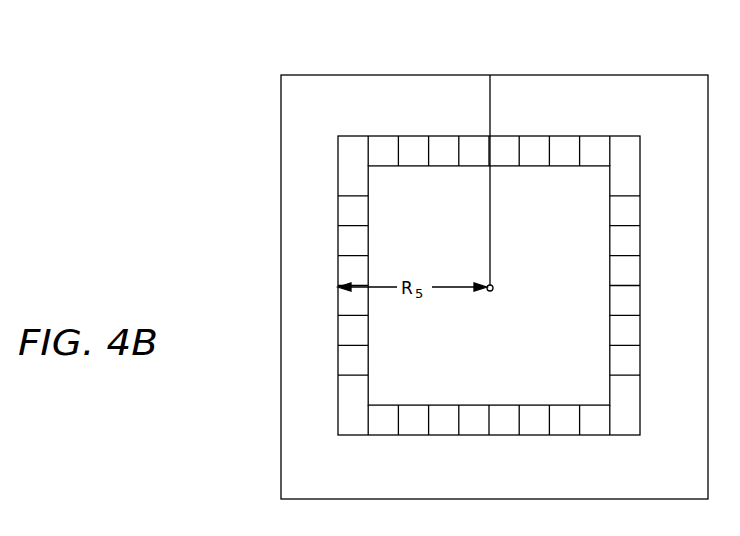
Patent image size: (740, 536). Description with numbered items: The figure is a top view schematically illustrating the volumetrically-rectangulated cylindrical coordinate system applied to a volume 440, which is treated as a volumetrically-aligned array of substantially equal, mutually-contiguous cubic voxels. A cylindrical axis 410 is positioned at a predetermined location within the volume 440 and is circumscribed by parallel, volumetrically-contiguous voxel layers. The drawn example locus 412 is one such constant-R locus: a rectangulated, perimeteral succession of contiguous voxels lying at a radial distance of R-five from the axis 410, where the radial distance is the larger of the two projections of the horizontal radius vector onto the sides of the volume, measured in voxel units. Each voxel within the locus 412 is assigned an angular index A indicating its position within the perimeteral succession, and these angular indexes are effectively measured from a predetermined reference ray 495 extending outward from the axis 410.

The volume 440 is at (325, 93).
The voxel layer 412 is at (600, 135).
The reference ray 495 is at (491, 115).
The cylindrical axis 410 is at (493, 291).